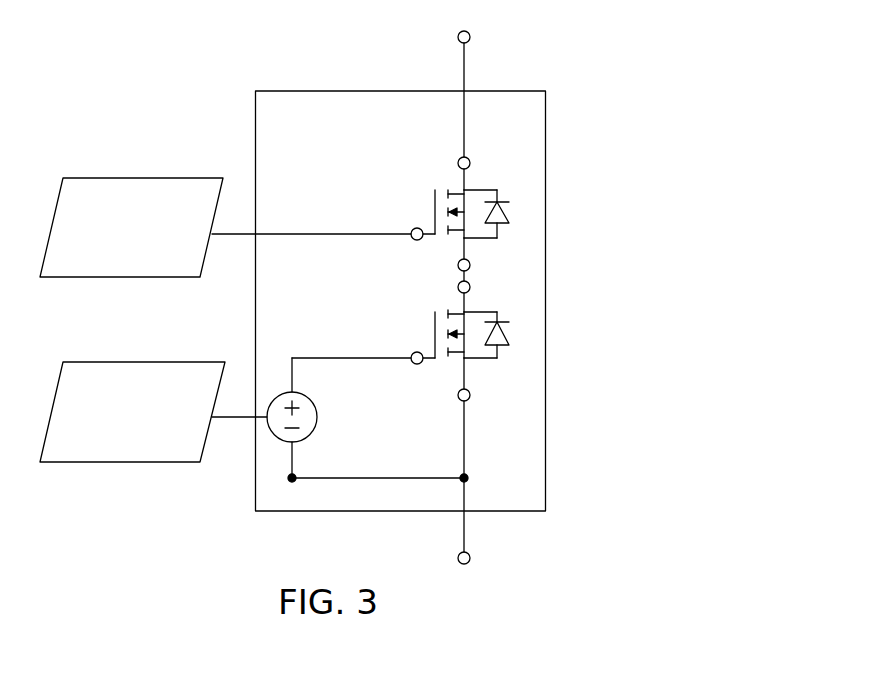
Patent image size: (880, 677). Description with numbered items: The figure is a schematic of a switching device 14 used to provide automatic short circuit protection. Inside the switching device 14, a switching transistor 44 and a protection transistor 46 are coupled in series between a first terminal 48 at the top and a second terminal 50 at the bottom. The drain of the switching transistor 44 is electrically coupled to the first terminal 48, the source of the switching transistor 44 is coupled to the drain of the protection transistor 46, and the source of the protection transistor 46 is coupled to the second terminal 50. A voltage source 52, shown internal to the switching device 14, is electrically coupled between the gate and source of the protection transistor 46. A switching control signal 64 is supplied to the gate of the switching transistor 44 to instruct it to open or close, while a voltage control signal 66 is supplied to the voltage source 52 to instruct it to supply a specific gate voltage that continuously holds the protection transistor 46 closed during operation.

The switching device 14 is at (350, 90).
The switching transistor 44 is at (471, 255).
The protection transistor 46 is at (471, 378).
The first terminal 48 is at (471, 35).
The second terminal 50 is at (471, 556).
The voltage source 52 is at (318, 420).
The switching control signal 64 is at (141, 176).
The voltage control signal 66 is at (141, 360).